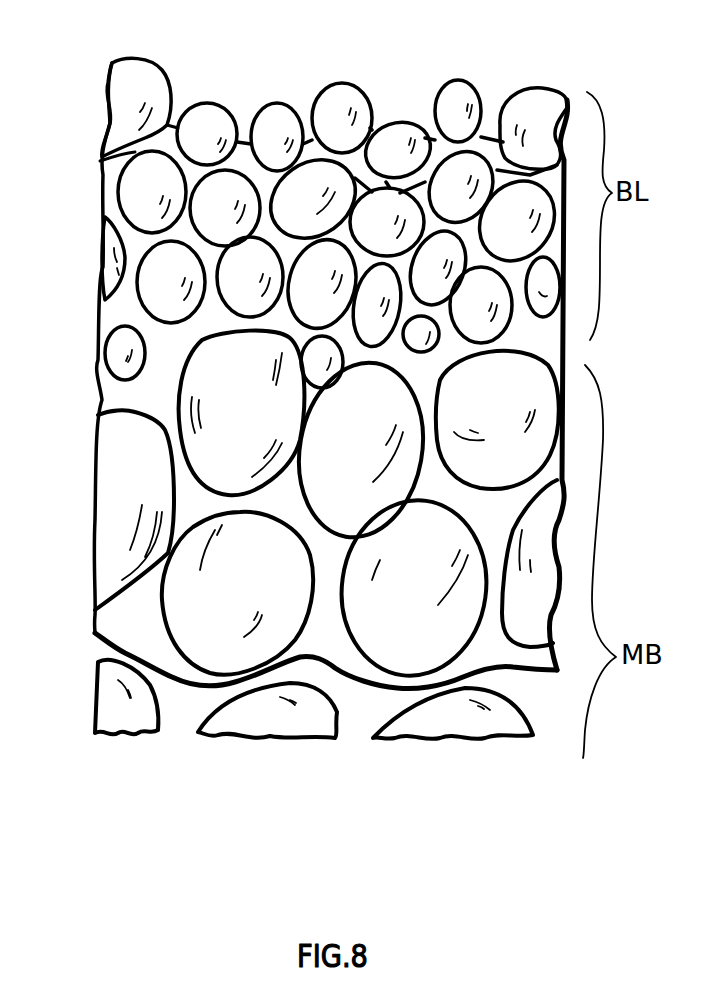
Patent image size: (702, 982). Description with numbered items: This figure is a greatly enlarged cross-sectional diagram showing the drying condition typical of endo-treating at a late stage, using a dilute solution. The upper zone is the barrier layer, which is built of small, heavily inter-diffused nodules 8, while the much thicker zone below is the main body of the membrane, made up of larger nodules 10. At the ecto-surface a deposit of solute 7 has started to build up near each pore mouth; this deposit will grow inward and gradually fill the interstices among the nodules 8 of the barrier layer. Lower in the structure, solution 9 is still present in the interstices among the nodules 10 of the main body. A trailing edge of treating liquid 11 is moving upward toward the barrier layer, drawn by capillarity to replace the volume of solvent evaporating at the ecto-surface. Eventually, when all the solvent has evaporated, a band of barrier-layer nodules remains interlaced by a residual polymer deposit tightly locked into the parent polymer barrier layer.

The deposit of solute 7 is at (493, 128).
The nodules of the BL 8 is at (119, 199).
The solution 9 is at (156, 377).
The nodules of the MB 10 is at (126, 512).
The trailing edge of treating liquid 11 is at (185, 686).